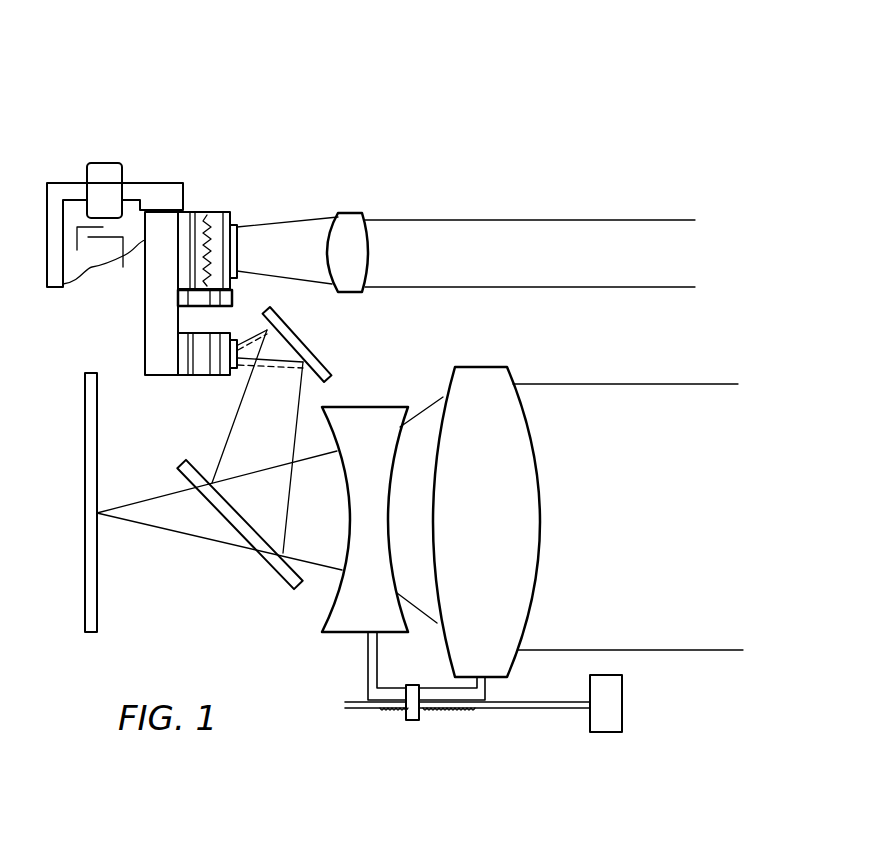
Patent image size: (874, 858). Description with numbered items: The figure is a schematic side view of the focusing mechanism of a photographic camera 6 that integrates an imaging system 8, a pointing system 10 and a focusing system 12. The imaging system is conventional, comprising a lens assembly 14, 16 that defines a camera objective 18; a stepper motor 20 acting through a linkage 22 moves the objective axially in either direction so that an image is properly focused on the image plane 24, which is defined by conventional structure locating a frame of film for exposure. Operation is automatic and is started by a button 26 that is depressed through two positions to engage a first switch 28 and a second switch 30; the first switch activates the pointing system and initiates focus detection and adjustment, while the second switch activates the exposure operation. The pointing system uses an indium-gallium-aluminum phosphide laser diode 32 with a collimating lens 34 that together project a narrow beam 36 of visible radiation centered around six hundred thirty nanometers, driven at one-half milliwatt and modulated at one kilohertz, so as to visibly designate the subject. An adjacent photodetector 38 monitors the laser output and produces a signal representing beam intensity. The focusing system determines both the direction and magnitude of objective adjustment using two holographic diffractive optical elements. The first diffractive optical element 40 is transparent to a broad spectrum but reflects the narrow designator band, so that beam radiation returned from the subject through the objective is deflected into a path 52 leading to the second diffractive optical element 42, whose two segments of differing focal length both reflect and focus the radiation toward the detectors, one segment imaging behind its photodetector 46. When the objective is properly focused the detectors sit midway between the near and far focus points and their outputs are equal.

The camera 6 is at (133, 118).
The imaging system 8 is at (591, 363).
The pointing system 10 is at (311, 186).
The focusing system 12 is at (365, 326).
The lens assembly element 14 is at (332, 608).
The lens assembly element 16 is at (522, 615).
The camera objective 18 is at (341, 661).
The stepper motor 20 is at (613, 690).
The linkage 22 is at (449, 729).
The image plane 24 is at (87, 442).
The button 26 is at (100, 163).
The first switch 28 is at (78, 257).
The second switch 30 is at (123, 268).
The laser diode 32 is at (240, 236).
The collimating lens 34 is at (363, 262).
The beam 36 is at (657, 220).
The photodetector 38 is at (236, 300).
The first diffractive optical element 40 is at (275, 577).
The second diffractive optical element 42 is at (327, 360).
The photodetector 46 is at (193, 378).
The path 52 is at (238, 407).